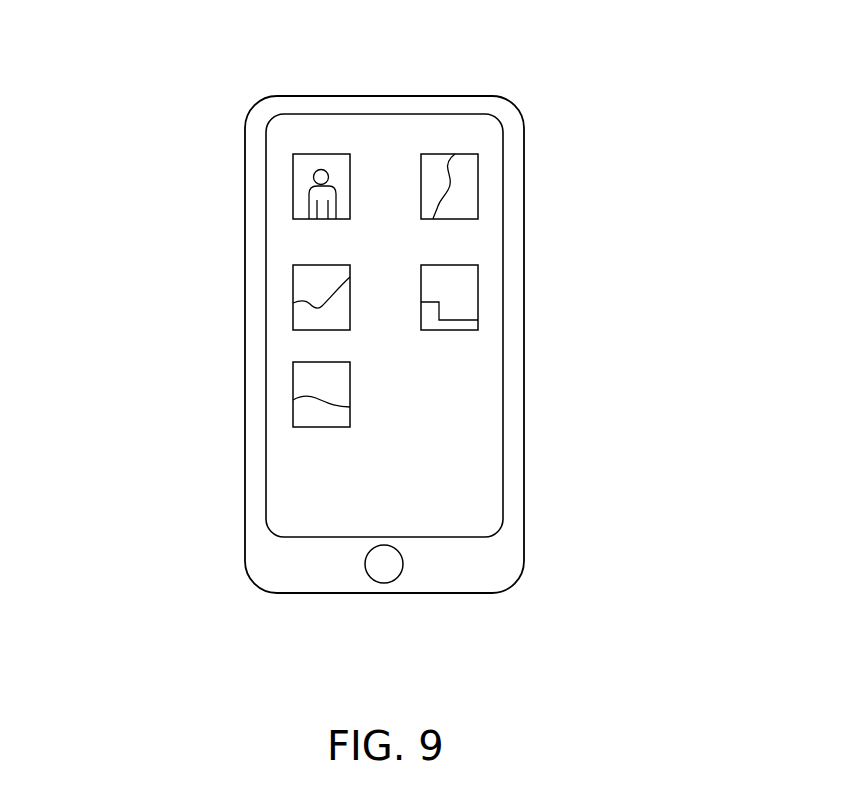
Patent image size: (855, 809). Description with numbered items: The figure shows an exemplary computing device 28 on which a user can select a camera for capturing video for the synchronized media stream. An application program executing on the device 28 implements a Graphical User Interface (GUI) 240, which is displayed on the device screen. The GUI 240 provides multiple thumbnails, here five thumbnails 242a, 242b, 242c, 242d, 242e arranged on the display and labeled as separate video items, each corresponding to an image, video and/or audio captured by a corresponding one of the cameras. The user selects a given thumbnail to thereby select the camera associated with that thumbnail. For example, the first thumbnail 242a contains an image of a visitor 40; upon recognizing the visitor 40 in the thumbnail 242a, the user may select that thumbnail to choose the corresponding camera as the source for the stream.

The device 28 is at (539, 73).
The Graphical User Interface (GUI) 240 is at (475, 367).
The thumbnail 242a is at (229, 190).
The thumbnail 242b is at (462, 211).
The thumbnail 242c is at (293, 287).
The thumbnail 242d is at (472, 293).
The thumbnail 242e is at (301, 387).
The visitor 40 is at (318, 200).